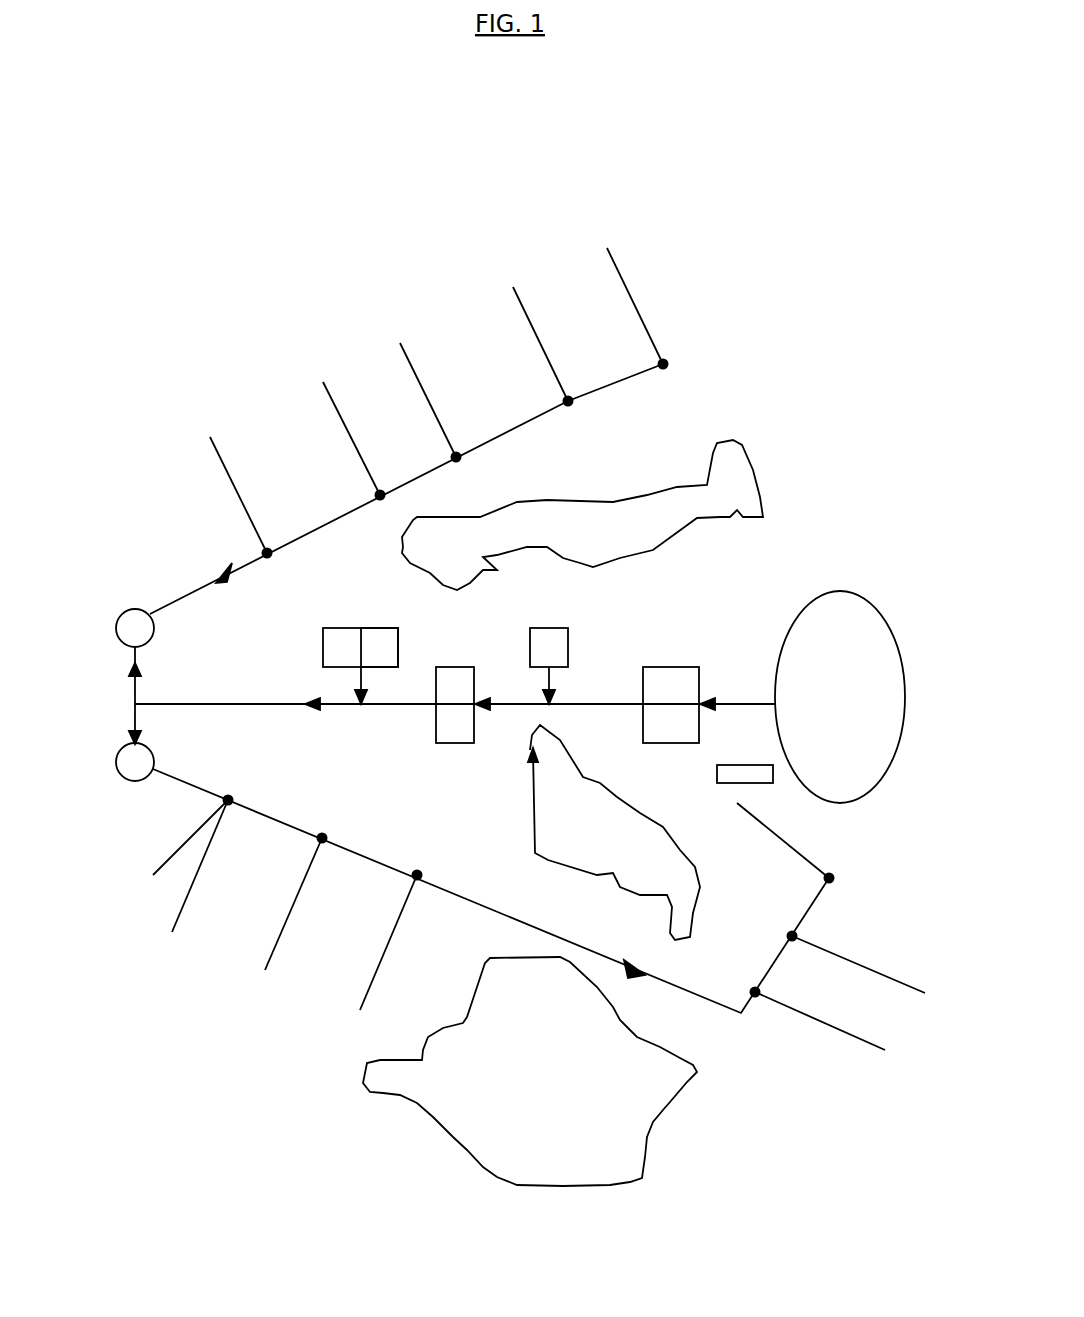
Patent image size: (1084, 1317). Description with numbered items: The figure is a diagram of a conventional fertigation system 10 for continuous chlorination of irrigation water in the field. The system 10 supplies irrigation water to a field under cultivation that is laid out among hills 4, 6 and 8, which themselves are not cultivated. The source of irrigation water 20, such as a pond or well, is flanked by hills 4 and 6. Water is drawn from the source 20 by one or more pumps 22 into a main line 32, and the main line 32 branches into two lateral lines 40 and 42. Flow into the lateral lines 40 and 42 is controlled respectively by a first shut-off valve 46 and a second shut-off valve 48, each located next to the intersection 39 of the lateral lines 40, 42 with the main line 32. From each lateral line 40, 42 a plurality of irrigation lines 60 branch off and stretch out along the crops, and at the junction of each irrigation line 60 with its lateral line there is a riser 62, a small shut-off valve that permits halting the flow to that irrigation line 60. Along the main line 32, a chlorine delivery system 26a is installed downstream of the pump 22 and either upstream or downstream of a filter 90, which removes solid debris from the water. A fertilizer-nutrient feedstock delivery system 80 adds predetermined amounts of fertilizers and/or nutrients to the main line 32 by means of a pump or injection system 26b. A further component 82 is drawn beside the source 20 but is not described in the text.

The system 10 is at (405, 132).
The hill 4 is at (757, 458).
The hill 6 is at (614, 832).
The hill 8 is at (472, 1162).
The source of irrigation water 20 is at (905, 670).
The pump 22 is at (685, 665).
The chlorine delivery system 26a is at (549, 628).
The pump or injection system 26b is at (377, 628).
The main line 32 is at (247, 704).
The intersection 39 is at (134, 704).
The lateral line 40 is at (628, 382).
The lateral line 42 is at (193, 786).
The first shut-off valve 46 is at (115, 627).
The second shut-off valve 48 is at (115, 767).
The irrigation line 60 is at (623, 288).
The riser 62 is at (380, 495).
The fertilizer-nutrient feedstock delivery system 80 is at (321, 642).
The sensor unit 82 is at (745, 785).
The filter 90 is at (455, 743).